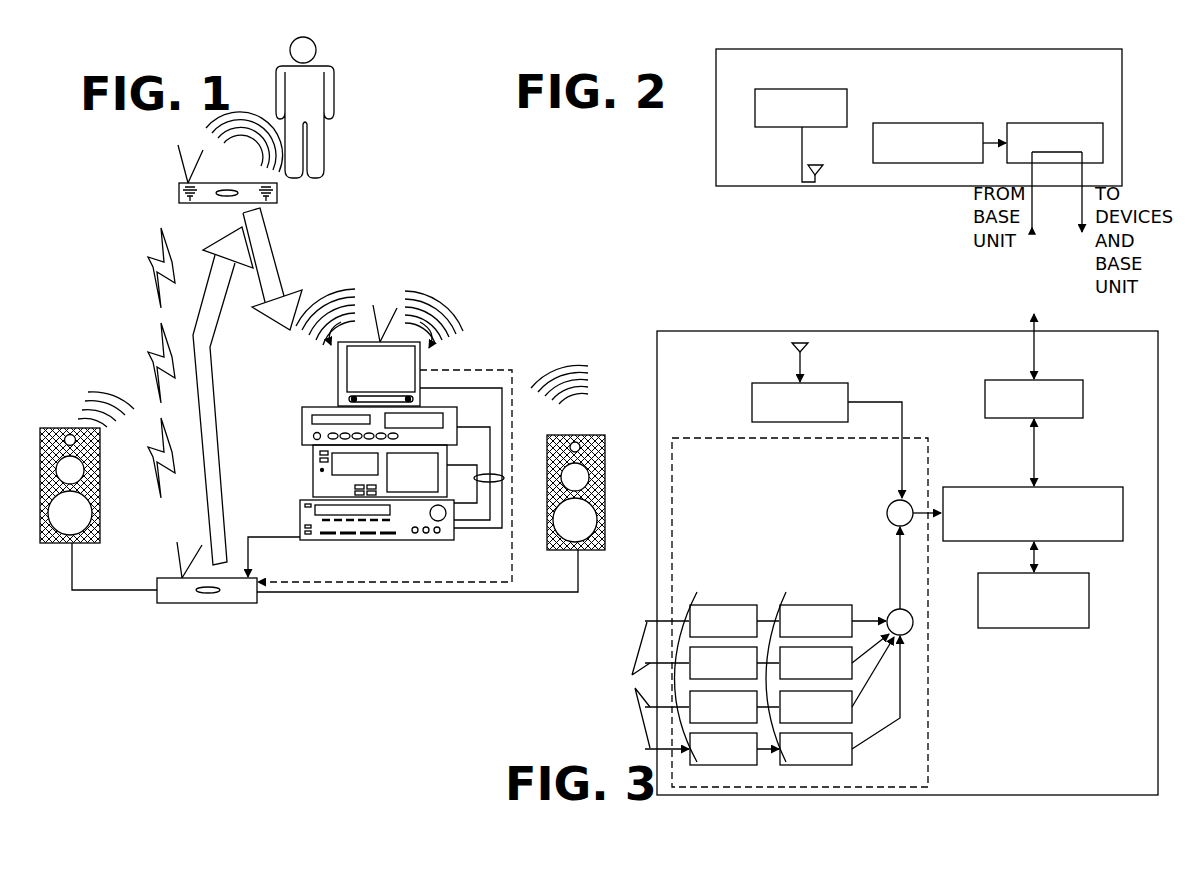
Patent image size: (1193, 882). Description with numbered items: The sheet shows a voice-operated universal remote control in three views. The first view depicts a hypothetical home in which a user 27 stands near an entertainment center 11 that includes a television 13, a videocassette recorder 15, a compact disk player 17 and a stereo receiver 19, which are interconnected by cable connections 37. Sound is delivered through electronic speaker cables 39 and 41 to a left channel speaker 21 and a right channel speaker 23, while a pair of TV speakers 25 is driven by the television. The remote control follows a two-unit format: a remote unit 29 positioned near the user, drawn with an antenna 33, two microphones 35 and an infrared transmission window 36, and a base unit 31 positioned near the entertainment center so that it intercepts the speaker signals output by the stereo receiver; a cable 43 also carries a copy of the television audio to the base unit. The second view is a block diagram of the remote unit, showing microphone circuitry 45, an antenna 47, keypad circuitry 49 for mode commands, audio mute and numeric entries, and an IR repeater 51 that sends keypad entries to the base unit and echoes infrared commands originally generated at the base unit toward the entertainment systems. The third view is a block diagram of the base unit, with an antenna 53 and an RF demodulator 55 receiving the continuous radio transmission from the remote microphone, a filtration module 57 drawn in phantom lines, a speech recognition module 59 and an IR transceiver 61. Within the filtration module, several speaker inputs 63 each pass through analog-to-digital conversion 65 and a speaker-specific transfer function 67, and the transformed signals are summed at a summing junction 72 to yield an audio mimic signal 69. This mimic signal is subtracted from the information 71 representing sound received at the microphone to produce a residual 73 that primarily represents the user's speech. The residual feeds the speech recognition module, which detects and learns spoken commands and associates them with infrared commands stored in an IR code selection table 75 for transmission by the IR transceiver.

In FIG. 1, the entertainment center 11 is at (433, 276).
In FIG. 1, the television 13 is at (415, 355).
In FIG. 1, the videocassette recorder 15 is at (443, 407).
In FIG. 1, the compact disk player 17 is at (448, 462).
In FIG. 1, the stereo receiver 19 is at (367, 540).
In FIG. 1, the left channel speaker 21 is at (568, 551).
In FIG. 1, the right channel speaker 23 is at (78, 428).
In FIG. 1, the TV speakers 25 is at (386, 335).
In FIG. 1, the user 27 is at (330, 66).
In FIG. 1, the remote unit 29 is at (240, 191).
In FIG. 2, the remote unit 29 is at (858, 48).
In FIG. 1, the base unit 31 is at (169, 576).
In FIG. 3, the base unit 31 is at (715, 329).
In FIG. 1, the antenna 33 is at (184, 183).
In FIG. 1, the microphones 35 is at (192, 204).
In FIG. 1, the infrared transmission window 36 is at (223, 197).
In FIG. 1, the cable connections 37 is at (500, 474).
In FIG. 1, the electronic speaker cable 39 is at (360, 594).
In FIG. 1, the electronic speaker cable 41 is at (130, 589).
In FIG. 1, the cable 43 is at (510, 538).
In FIG. 2, the microphone circuitry 45 is at (848, 107).
In FIG. 2, the antenna 47 is at (820, 178).
In FIG. 2, the keypad circuitry 49 is at (930, 123).
In FIG. 2, the IR repeater 51 is at (1056, 123).
In FIG. 3, the antenna 53 is at (792, 356).
In FIG. 3, the RF demodulator 55 is at (751, 401).
In FIG. 3, the filtration module 57 is at (740, 437).
In FIG. 3, the speech recognition module 59 is at (1065, 486).
In FIG. 3, the IR transceiver 61 is at (1085, 400).
In FIG. 3, the speaker inputs 63 is at (650, 685).
In FIG. 3, the analog-to-digital conversion 65 is at (727, 605).
In FIG. 3, the speaker-specific transfer function 67 is at (818, 604).
In FIG. 3, the audio mimic signal 69 is at (898, 576).
In FIG. 3, the information representing sound received at the microphone 71 is at (897, 400).
In FIG. 3, the summing junction 72 is at (914, 624).
In FIG. 3, the residual 73 is at (922, 505).
In FIG. 3, the IR code selection table 75 is at (1000, 629).